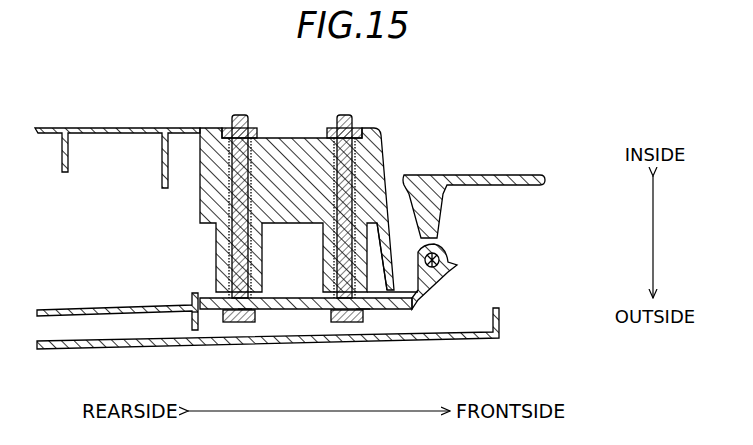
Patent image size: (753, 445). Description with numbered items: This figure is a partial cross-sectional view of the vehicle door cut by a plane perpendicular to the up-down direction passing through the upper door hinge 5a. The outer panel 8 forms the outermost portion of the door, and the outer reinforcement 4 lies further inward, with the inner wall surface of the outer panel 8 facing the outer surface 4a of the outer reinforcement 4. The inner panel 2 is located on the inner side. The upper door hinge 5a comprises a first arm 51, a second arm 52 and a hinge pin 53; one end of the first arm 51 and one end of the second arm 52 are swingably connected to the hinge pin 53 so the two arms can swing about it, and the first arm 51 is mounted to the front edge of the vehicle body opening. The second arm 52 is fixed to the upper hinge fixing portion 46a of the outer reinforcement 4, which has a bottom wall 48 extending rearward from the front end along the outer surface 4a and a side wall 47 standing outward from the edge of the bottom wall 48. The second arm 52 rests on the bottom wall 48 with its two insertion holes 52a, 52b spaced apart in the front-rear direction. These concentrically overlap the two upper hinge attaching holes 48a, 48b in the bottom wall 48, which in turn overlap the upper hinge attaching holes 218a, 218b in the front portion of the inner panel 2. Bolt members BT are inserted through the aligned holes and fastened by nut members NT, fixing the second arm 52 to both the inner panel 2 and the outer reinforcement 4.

The inner panel 2 is at (144, 128).
The outer reinforcement 4 is at (268, 322).
The outer surface of outer reinforcement 4a is at (158, 315).
The outer panel 8 is at (173, 350).
The side wall 47 is at (199, 325).
The bottom wall 48 is at (313, 310).
The upper hinge attaching hole 48a is at (360, 310).
The upper hinge attaching hole 48b is at (242, 304).
The upper hinge fixing portion 46a is at (287, 324).
The first arm 51 is at (486, 175).
The second arm 52 is at (372, 304).
The insertion hole 52a is at (350, 320).
The insertion hole 52b is at (246, 320).
The hinge pin 53 is at (440, 252).
The upper door hinge 5a is at (558, 162).
The upper hinge attaching hole 218a is at (363, 168).
The upper hinge attaching hole 218b is at (237, 205).
The bolt member BT is at (240, 115).
The nut member NT is at (258, 134).